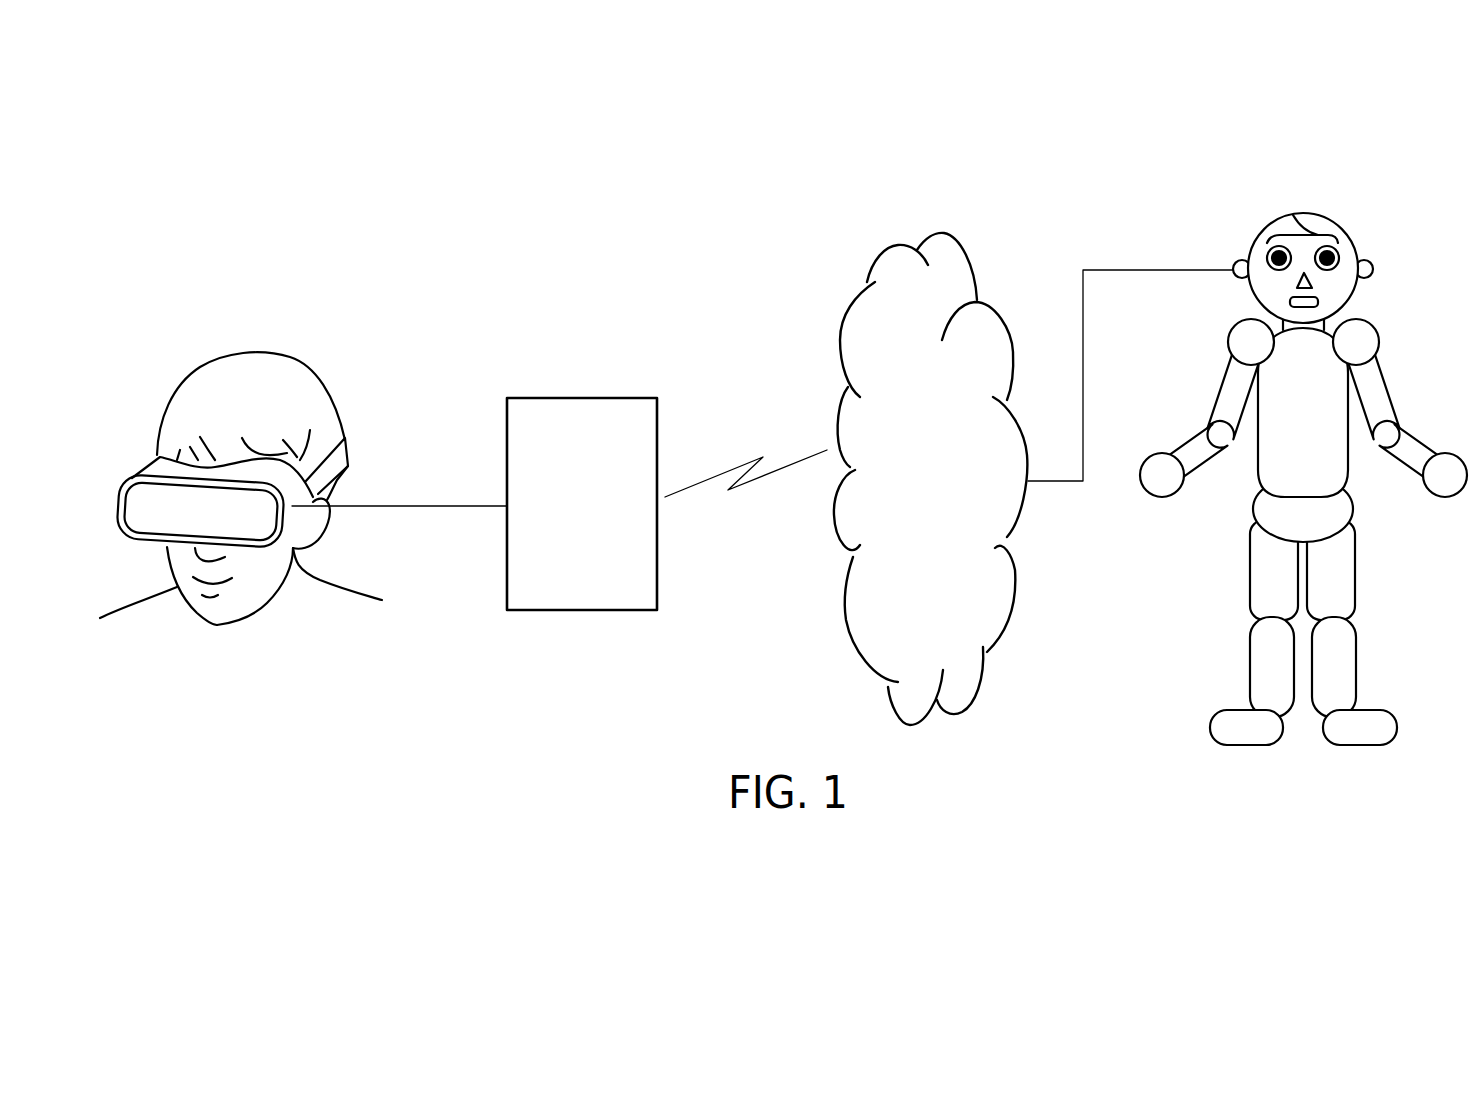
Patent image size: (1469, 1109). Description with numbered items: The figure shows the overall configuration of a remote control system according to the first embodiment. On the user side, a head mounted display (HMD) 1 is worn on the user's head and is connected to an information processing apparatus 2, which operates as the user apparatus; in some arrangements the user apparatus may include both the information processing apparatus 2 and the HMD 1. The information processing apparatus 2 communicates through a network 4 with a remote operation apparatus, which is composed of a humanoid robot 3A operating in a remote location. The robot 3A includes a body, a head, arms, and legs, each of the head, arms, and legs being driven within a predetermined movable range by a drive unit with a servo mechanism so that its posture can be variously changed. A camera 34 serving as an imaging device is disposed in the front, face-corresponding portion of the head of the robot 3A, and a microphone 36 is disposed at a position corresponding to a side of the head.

The head mounted display 1 is at (137, 507).
The information processing apparatus 2 is at (612, 398).
The network 4 is at (943, 233).
The robot 3A is at (1303, 469).
The camera 34 is at (1290, 217).
The microphone 36 is at (1373, 268).